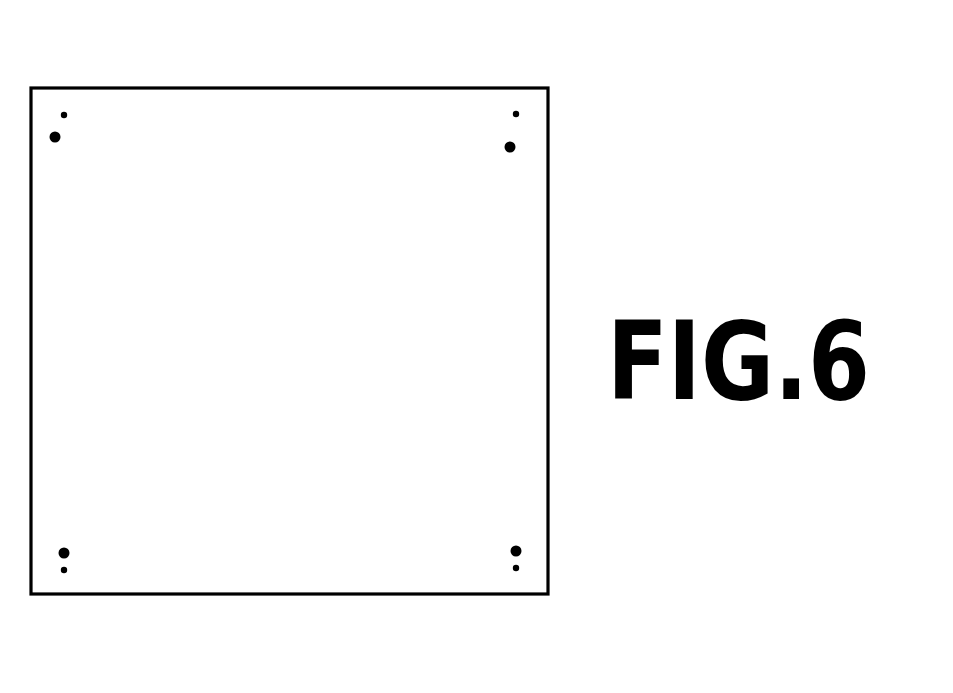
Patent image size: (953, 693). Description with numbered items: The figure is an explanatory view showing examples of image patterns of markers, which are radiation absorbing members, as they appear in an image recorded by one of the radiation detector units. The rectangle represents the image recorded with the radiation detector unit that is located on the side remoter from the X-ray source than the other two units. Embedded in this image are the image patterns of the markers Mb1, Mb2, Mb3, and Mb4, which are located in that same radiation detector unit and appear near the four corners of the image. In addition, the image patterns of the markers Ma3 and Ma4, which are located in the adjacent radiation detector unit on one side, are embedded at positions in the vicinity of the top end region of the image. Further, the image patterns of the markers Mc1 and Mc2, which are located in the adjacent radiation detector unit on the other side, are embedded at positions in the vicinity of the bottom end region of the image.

The marker Mb1 is at (64, 112).
The marker Mb2 is at (516, 111).
The marker Mb3 is at (64, 574).
The marker Mb4 is at (516, 572).
The marker Ma3 is at (57, 142).
The marker Ma4 is at (510, 152).
The marker Mc1 is at (64, 548).
The marker Mc2 is at (516, 546).